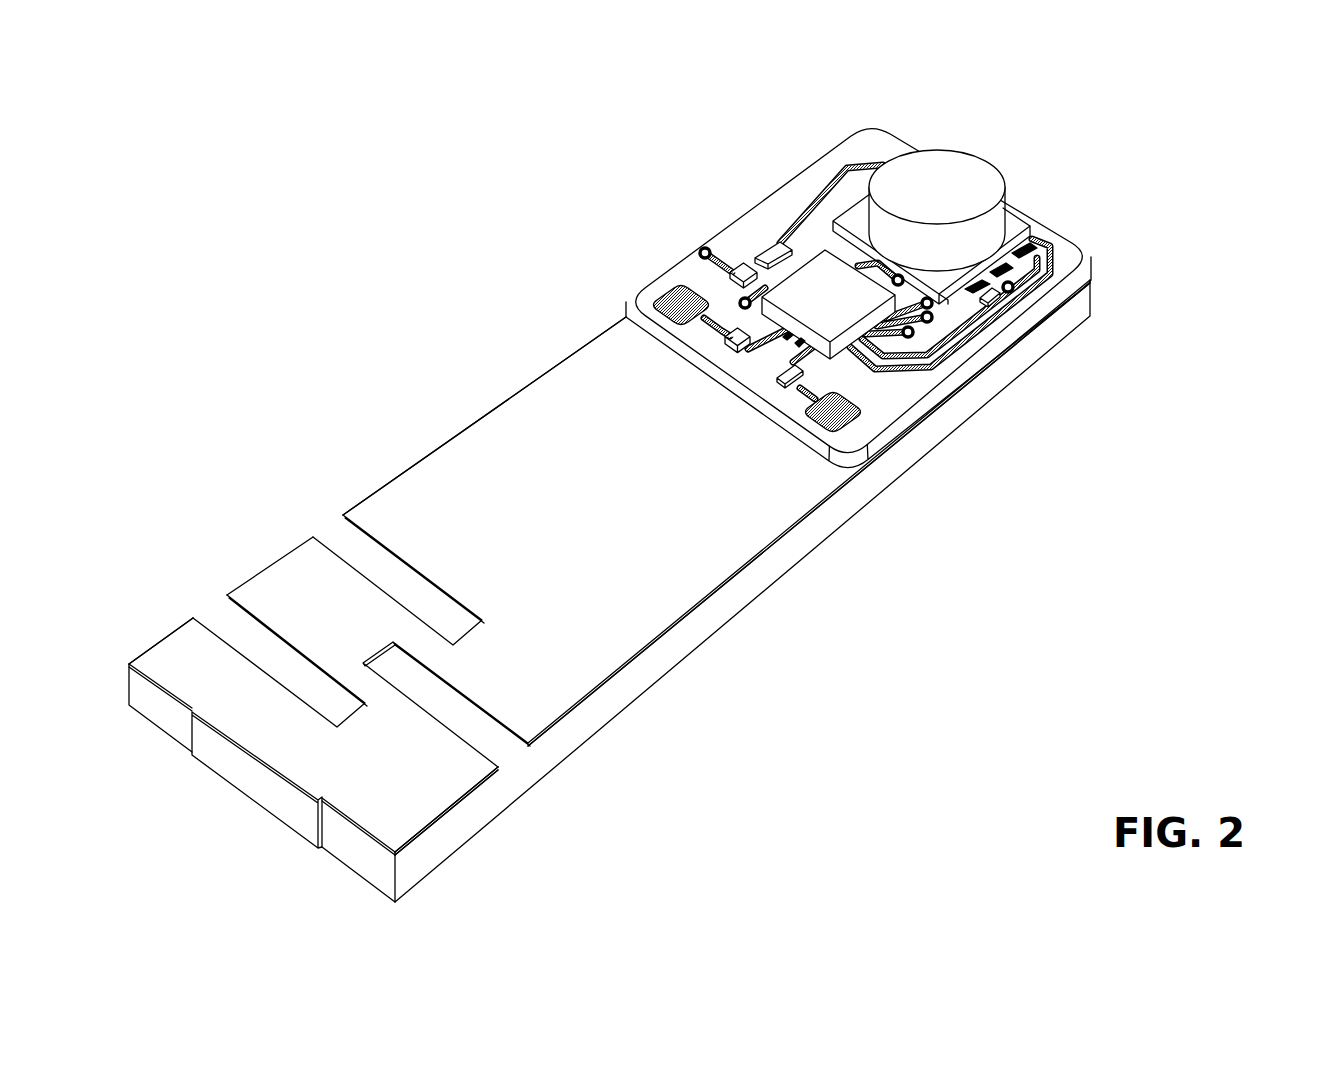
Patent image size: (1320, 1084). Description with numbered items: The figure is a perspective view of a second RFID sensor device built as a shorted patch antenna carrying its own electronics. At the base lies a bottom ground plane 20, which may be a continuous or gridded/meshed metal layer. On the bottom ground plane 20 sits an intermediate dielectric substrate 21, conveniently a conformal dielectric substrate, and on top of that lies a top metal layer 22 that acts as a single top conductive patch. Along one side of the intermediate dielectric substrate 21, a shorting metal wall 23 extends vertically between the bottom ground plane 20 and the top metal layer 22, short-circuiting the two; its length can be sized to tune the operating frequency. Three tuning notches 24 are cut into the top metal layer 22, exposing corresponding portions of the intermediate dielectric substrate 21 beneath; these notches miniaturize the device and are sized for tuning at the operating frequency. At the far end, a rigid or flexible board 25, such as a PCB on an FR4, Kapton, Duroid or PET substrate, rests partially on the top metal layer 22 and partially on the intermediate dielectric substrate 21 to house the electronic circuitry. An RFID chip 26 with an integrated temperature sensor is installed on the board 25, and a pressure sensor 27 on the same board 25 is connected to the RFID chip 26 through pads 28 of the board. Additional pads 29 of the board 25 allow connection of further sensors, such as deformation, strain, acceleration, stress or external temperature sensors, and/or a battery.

The bottom ground plane 20 is at (591, 722).
The intermediate dielectric substrate 21 is at (714, 600).
The top metal layer 22 is at (470, 456).
The shorting metal wall 23 is at (270, 786).
The tuning notches 24 is at (342, 538).
The rigid or flexible board 25 is at (741, 231).
The RFID chip 26 is at (818, 264).
The pressure sensor 27 is at (957, 167).
The pads 28 is at (977, 303).
The additional pads 29 is at (672, 300).